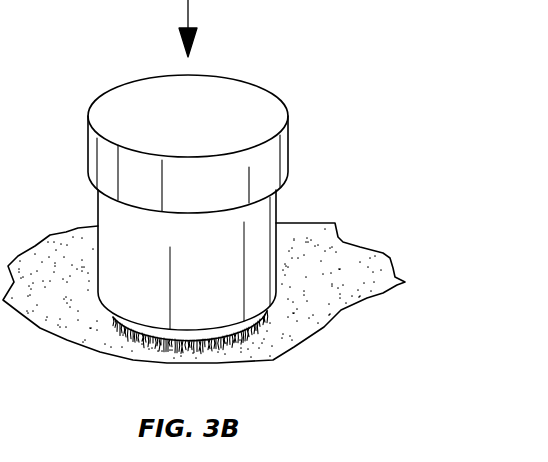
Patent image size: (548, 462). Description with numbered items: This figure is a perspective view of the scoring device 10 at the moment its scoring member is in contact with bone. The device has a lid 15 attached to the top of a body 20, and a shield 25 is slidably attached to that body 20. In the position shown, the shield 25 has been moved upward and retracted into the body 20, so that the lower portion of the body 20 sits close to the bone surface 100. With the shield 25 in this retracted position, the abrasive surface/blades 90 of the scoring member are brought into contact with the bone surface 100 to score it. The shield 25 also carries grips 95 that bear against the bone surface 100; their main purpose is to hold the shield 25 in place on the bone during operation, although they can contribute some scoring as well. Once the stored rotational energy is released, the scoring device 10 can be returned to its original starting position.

The scoring device 10 is at (123, 56).
The lid 15 is at (110, 146).
The body 20 is at (130, 233).
The shield 25 is at (150, 330).
The abrasive surface/blades 90 is at (197, 350).
The grips 95 is at (224, 348).
The bone surface 100 is at (294, 337).